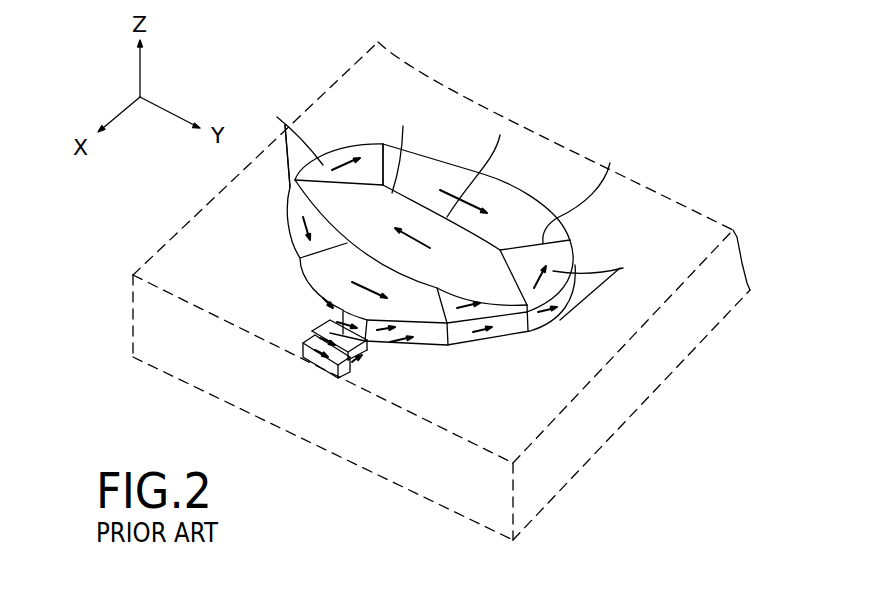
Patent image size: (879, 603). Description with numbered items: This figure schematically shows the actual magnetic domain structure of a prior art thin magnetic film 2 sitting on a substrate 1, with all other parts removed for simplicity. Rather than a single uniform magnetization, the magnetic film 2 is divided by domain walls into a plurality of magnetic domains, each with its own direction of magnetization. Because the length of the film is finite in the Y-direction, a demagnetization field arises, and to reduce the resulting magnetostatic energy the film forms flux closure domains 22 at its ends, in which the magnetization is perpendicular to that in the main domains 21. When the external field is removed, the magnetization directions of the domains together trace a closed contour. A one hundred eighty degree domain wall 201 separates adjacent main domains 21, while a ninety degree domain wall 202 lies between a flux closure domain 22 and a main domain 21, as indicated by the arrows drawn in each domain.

The substrate 1 is at (640, 391).
The magnetic film 2 is at (263, 254).
The main domain 21 is at (417, 162).
The flux closure domain 22 is at (458, 203).
The 180 degree domain wall 201 is at (506, 132).
The 90 degree domain wall 202 is at (616, 162).